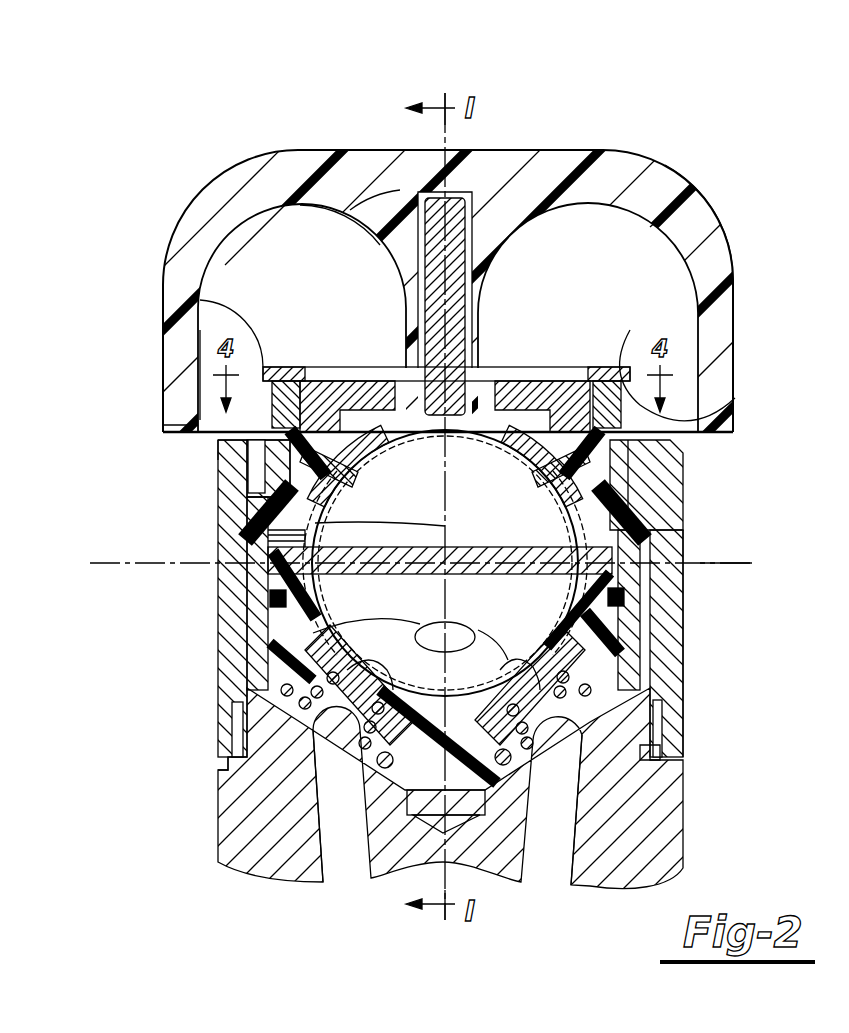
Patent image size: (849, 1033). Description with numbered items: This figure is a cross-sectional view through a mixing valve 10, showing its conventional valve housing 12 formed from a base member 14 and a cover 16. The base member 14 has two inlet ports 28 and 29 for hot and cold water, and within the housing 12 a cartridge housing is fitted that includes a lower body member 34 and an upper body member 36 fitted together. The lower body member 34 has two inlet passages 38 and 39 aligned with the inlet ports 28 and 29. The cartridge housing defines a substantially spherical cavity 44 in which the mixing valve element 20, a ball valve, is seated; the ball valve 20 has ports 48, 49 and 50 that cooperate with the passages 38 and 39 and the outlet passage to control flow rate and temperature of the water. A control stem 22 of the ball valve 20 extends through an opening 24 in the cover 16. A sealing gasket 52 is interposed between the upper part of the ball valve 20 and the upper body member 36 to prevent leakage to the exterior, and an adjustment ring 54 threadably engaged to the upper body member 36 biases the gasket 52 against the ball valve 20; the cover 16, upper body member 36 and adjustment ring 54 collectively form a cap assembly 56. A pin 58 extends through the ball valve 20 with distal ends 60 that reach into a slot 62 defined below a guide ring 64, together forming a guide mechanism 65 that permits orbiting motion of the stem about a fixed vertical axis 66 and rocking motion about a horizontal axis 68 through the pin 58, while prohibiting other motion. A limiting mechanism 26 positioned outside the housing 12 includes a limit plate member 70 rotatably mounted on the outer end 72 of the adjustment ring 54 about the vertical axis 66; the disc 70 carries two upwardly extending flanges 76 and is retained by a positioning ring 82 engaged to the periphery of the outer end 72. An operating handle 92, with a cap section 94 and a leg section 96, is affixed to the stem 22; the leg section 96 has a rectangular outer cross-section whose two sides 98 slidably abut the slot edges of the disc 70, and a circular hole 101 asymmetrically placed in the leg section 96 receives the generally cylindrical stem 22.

The mixing valve 10 is at (200, 443).
The valve housing 12 is at (205, 757).
The base member 14 is at (230, 827).
The cover 16 is at (235, 600).
The mixing valve element 20 is at (243, 490).
The control stem 22 is at (310, 460).
The opening 24 is at (352, 385).
The limiting mechanism 26 is at (604, 354).
The inlet port 28 is at (352, 867).
The inlet port 29 is at (548, 866).
The lower body member 34 is at (670, 688).
The upper body member 36 is at (668, 615).
The inlet passage 38 is at (262, 760).
The inlet passage 39 is at (655, 752).
The cavity 44 is at (660, 668).
The port 48 is at (251, 282).
The port 49 is at (680, 725).
The port 50 is at (300, 615).
The sealing gasket 52 is at (545, 470).
The adjustment ring 54 is at (195, 432).
The cap assembly 56 is at (695, 458).
The pin 58 is at (668, 645).
The distal ends 60 is at (262, 540).
The slot 62 is at (618, 570).
The guide ring 64 is at (672, 542).
The guide mechanism 65 is at (268, 551).
The vertical axis 66 is at (290, 512).
The horizontal axis 68 is at (752, 562).
The limit plate member 70 is at (337, 375).
The outer end 72 is at (178, 305).
The flanges 76 is at (372, 405).
The positioning ring 82 is at (735, 398).
The operating handle 92 is at (572, 147).
The cap section 94 is at (697, 205).
The leg section 96 is at (550, 370).
The sides 98 is at (390, 413).
The circular hole 101 is at (430, 192).